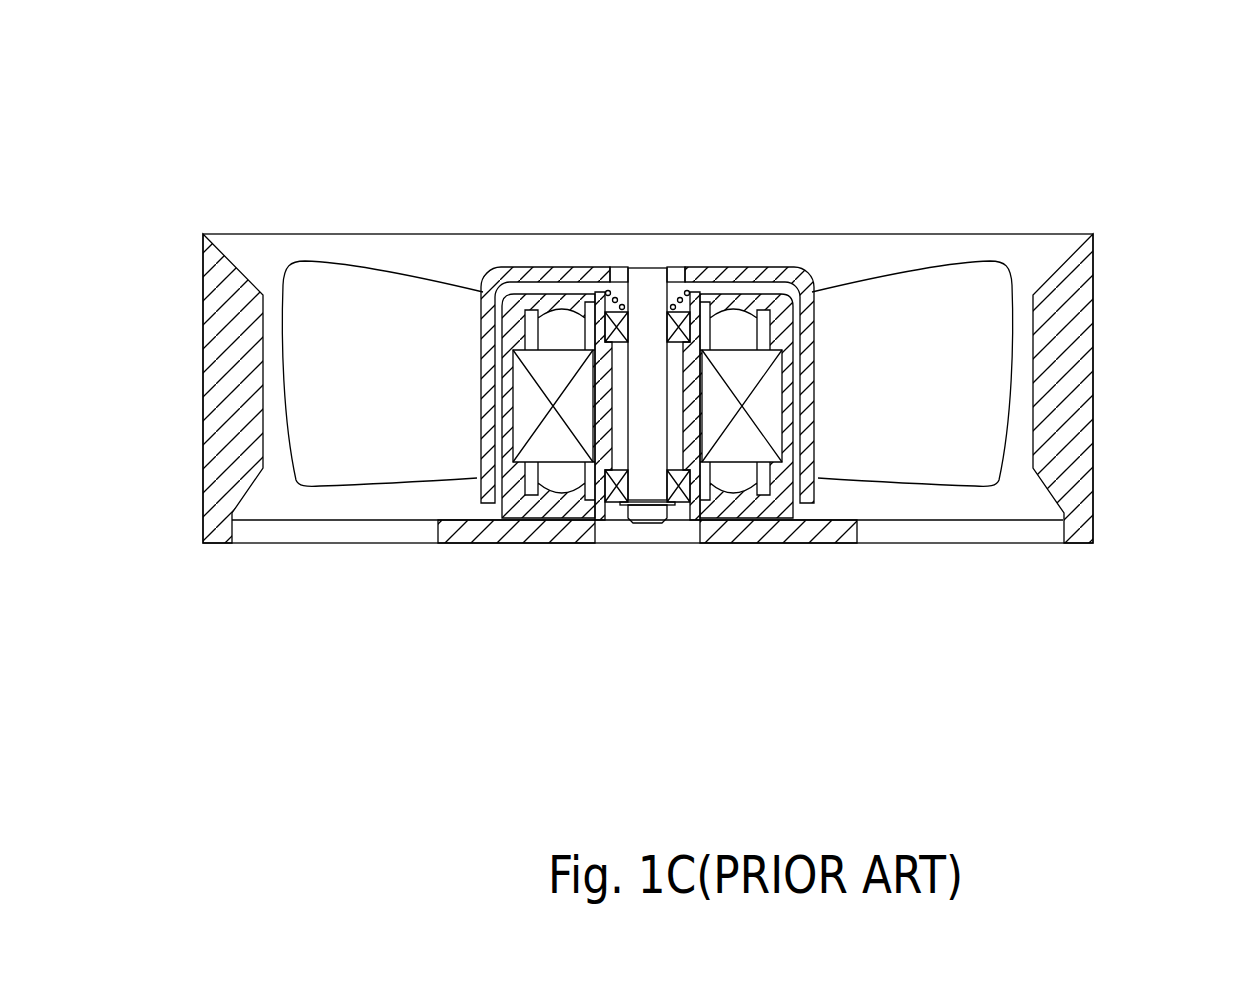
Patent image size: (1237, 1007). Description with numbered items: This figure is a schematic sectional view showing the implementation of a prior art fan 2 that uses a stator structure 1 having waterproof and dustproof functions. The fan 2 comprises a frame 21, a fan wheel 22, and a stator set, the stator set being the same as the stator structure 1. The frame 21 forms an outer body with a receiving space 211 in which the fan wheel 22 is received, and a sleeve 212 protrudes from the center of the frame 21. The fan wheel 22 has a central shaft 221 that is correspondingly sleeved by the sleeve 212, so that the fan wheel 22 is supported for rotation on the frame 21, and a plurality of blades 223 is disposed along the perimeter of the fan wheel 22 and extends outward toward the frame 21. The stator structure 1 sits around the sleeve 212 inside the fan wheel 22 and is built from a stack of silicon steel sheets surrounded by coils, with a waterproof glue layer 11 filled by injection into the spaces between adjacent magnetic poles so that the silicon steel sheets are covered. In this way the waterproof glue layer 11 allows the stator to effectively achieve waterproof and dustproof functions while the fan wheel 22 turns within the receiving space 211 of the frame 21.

The stator structure 1 is at (608, 309).
The waterproof glue layer 11 is at (513, 317).
The fan 2 is at (1135, 165).
The frame 21 is at (1068, 395).
The receiving space 211 is at (979, 522).
The sleeve 212 is at (597, 292).
The fan wheel 22 is at (743, 272).
The shaft 221 is at (647, 290).
The blades 223 is at (897, 302).